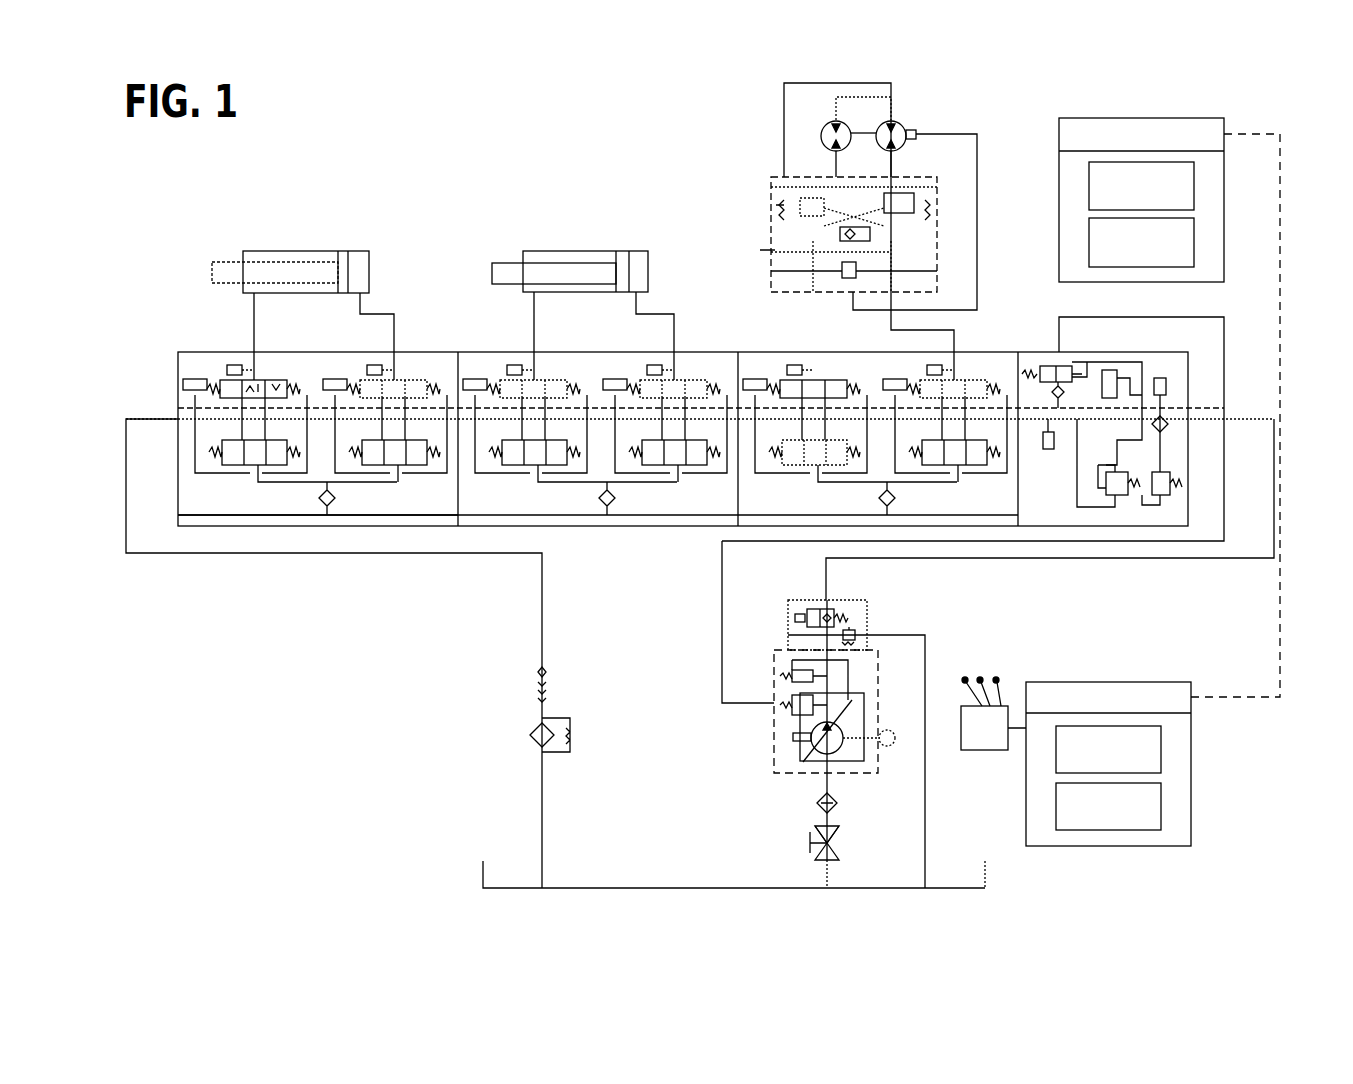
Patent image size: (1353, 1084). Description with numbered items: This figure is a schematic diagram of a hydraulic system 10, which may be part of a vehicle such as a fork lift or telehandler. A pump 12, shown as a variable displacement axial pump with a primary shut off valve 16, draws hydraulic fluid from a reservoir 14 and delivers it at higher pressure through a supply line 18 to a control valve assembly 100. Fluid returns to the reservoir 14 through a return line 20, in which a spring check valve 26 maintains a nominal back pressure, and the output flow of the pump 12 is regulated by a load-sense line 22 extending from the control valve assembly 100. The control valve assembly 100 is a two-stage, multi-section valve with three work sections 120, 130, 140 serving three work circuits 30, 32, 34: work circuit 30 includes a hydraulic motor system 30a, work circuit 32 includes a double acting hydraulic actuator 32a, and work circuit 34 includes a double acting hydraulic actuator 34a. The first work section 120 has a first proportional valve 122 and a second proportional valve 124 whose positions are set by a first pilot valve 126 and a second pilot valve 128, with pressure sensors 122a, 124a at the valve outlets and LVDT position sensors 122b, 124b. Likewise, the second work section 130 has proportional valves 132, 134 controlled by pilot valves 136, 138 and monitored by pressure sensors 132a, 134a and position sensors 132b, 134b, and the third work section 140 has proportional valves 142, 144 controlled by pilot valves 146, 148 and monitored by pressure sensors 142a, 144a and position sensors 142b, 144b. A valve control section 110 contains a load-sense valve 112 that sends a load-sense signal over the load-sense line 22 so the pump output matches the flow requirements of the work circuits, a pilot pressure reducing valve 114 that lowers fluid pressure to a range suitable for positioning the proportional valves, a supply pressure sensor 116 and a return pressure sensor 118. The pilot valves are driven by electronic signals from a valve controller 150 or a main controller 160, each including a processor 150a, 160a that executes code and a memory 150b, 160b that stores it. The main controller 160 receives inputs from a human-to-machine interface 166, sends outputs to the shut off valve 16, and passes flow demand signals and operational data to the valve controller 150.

The hydraulic system 10 is at (383, 131).
The pump 12 is at (793, 735).
The reservoir 14 is at (483, 876).
The primary shut off valve 16 is at (828, 612).
The supply line 18 is at (1006, 558).
The return line 20 is at (487, 553).
The load-sense line 22 is at (720, 630).
The spring check valve 26 is at (535, 680).
The work circuit 30 is at (733, 140).
The hydraulic motor system 30a is at (898, 124).
The work circuit 32 is at (502, 236).
The double acting hydraulic actuator 32a is at (613, 251).
The work circuit 34 is at (214, 231).
The double acting hydraulic actuator 34a is at (312, 251).
The control valve assembly 100 is at (292, 522).
The valve control section 110 is at (1022, 352).
The load-sense valve 112 is at (1055, 368).
The pressure relief valves 114 is at (1164, 498).
The supply pressure sensor 116 is at (1158, 378).
The return pressure sensor 118 is at (1044, 452).
The first work section 120 is at (797, 522).
The first proportional valve 122 is at (812, 378).
The pressure sensor 122a is at (790, 365).
The position sensor 122b is at (750, 378).
The second proportional valve 124 is at (958, 378).
The pressure sensor 124a is at (930, 365).
The position sensor 124b is at (886, 378).
The first pilot valve 126 is at (802, 468).
The second pilot valve 128 is at (975, 468).
The second work section 130 is at (640, 522).
The first proportional valve 132 is at (545, 378).
The pressure sensor 132a is at (512, 365).
The position sensor 132b is at (470, 378).
The second proportional valve 134 is at (683, 378).
The pressure sensor 134a is at (651, 365).
The position sensor 134b is at (610, 378).
The first pilot valve 136 is at (562, 468).
The second pilot valve 138 is at (692, 468).
The third work section 140 is at (355, 522).
The first proportional valve 142 is at (262, 378).
The pressure sensor 142a is at (232, 365).
The position sensor 142b is at (188, 378).
The second proportional valve 144 is at (398, 378).
The pressure sensor 144a is at (370, 365).
The position sensor 144b is at (328, 378).
The first pilot valve 146 is at (265, 468).
The second pilot valve 148 is at (418, 468).
The valve controller 150 is at (1059, 140).
The processor 150a is at (1089, 190).
The memory 150b is at (1089, 245).
The main controller 160 is at (1128, 682).
The processor 160a is at (1162, 742).
The memory 160b is at (1162, 806).
The human-to-machine interface 166 is at (993, 713).